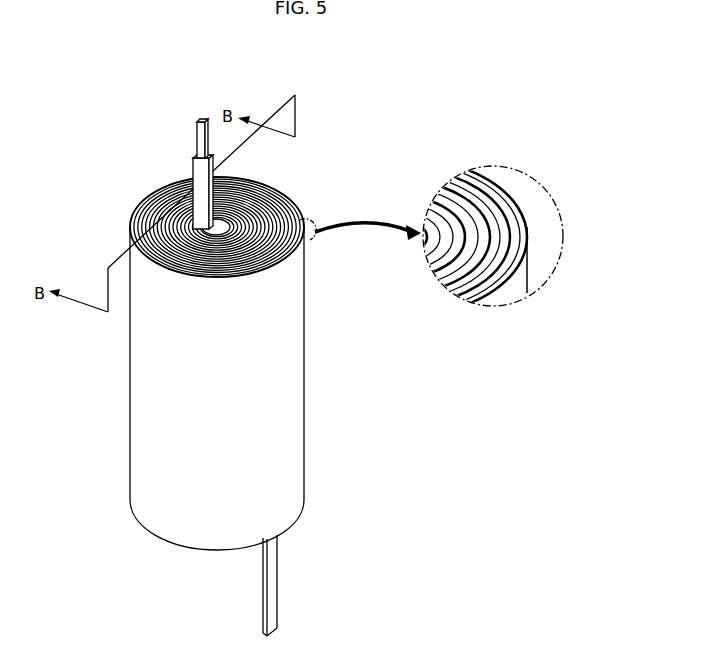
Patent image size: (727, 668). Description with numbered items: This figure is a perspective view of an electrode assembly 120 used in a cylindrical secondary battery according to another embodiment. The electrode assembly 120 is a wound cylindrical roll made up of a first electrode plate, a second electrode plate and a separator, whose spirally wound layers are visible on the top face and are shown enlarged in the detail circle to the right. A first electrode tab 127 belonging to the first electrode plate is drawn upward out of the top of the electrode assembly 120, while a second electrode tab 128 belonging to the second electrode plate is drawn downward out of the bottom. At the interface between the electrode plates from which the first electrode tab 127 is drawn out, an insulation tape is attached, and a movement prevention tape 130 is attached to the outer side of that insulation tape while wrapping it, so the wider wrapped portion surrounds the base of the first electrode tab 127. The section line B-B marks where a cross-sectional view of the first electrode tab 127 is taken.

The electrode assembly 120 is at (285, 202).
The first electrode tab 127 is at (203, 120).
The second electrode tab 128 is at (273, 586).
The movement prevention tape 130 is at (193, 172).